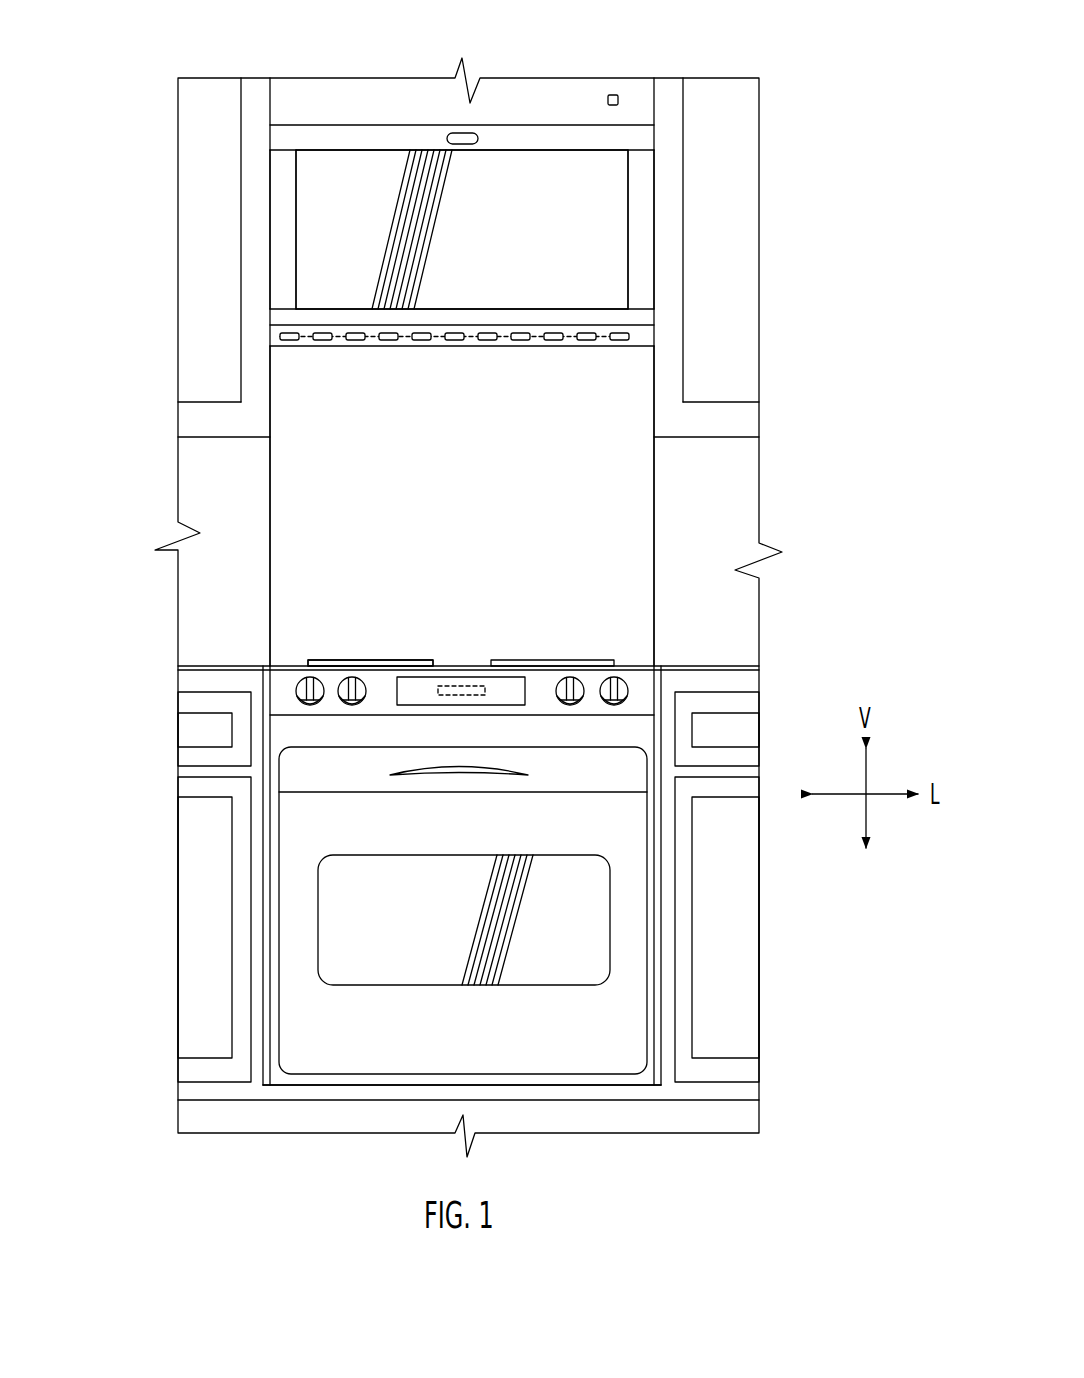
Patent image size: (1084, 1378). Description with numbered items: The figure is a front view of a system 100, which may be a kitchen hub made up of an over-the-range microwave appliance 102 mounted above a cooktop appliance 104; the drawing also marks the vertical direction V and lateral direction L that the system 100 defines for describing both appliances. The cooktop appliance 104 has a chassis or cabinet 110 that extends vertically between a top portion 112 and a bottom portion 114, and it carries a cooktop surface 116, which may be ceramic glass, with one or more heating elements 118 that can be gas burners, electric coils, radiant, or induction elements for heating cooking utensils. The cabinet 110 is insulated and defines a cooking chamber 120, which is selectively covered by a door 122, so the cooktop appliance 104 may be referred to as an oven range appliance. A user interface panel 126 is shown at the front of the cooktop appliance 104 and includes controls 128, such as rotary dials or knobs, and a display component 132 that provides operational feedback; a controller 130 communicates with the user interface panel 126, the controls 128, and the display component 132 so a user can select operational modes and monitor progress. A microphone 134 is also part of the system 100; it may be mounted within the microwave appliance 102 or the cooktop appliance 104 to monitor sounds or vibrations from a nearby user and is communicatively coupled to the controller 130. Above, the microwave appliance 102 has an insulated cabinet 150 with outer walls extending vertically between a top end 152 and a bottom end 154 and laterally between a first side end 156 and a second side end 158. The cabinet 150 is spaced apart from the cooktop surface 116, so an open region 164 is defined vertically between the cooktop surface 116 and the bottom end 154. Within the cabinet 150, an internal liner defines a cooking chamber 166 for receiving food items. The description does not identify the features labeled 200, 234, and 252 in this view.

The system 100 is at (118, 136).
The microwave appliance 102 is at (639, 229).
The cooktop appliance 104 is at (256, 899).
The cabinet 110 is at (255, 1073).
The top portion 112 is at (262, 657).
The bottom portion 114 is at (316, 1087).
The cooktop surface 116 is at (295, 657).
The heating elements 118 is at (373, 660).
The cooking chamber 120 is at (388, 919).
The door 122 is at (636, 932).
The user interface panel 126 is at (642, 690).
The controls 128 is at (630, 688).
The controller 130 is at (457, 678).
The display component 132 is at (498, 680).
The microphone 134 is at (617, 96).
The cabinet 150 is at (655, 163).
The top end 152 is at (392, 120).
The bottom end 154 is at (637, 346).
The first side end 156 is at (656, 295).
The second side end 158 is at (269, 283).
The open region 164 is at (412, 507).
The cooking chamber 166 is at (333, 188).
The cooking chamber 200 is at (532, 172).
The light emitted from illumination source 234 is at (365, 170).
The vent openings 252 is at (531, 338).